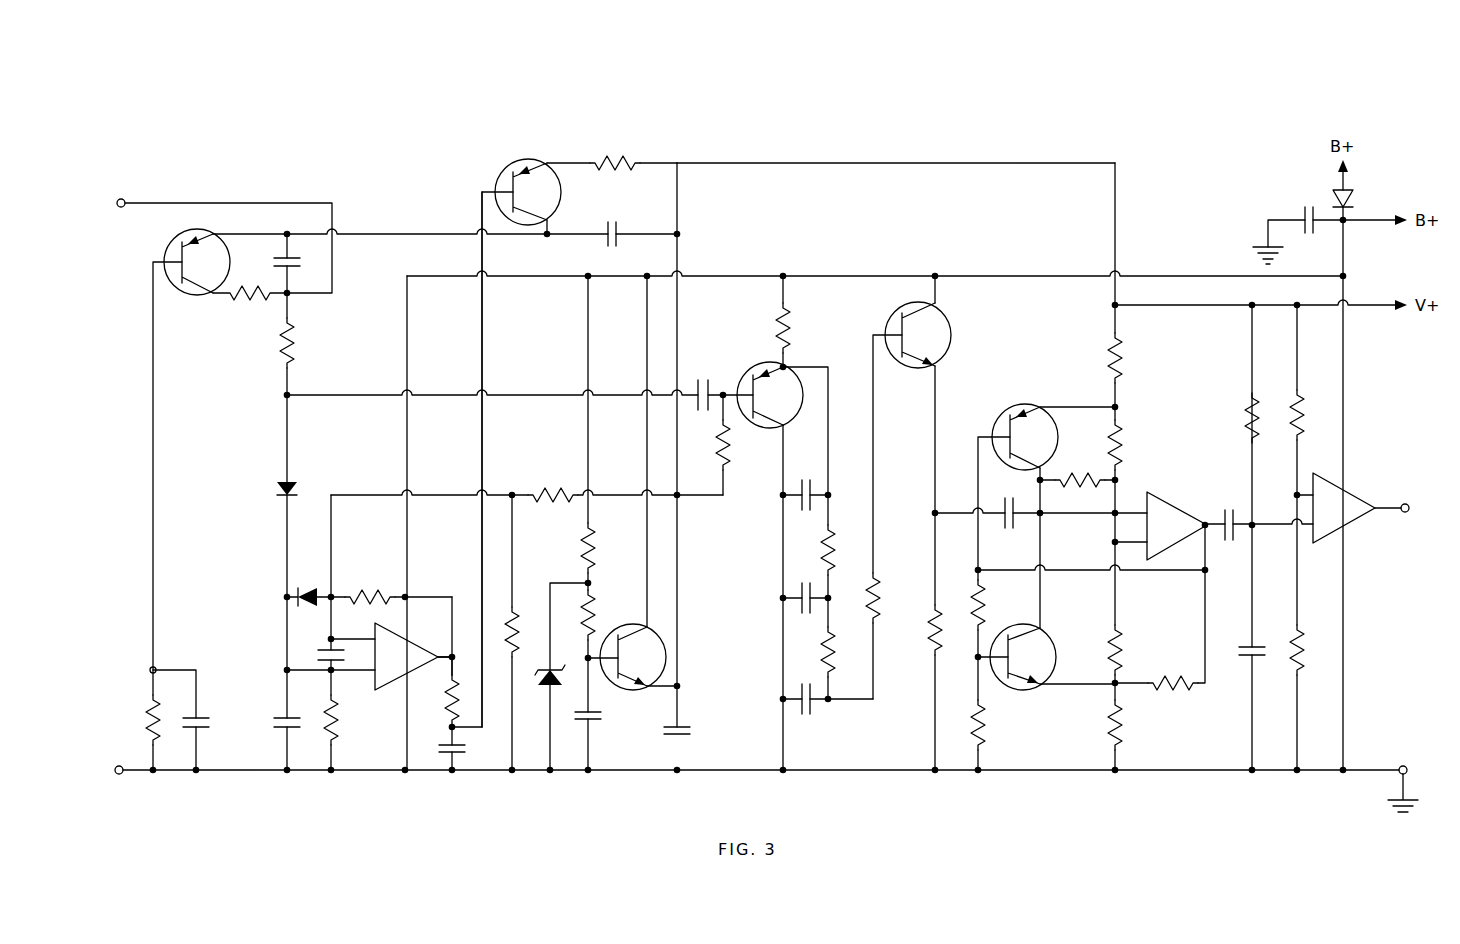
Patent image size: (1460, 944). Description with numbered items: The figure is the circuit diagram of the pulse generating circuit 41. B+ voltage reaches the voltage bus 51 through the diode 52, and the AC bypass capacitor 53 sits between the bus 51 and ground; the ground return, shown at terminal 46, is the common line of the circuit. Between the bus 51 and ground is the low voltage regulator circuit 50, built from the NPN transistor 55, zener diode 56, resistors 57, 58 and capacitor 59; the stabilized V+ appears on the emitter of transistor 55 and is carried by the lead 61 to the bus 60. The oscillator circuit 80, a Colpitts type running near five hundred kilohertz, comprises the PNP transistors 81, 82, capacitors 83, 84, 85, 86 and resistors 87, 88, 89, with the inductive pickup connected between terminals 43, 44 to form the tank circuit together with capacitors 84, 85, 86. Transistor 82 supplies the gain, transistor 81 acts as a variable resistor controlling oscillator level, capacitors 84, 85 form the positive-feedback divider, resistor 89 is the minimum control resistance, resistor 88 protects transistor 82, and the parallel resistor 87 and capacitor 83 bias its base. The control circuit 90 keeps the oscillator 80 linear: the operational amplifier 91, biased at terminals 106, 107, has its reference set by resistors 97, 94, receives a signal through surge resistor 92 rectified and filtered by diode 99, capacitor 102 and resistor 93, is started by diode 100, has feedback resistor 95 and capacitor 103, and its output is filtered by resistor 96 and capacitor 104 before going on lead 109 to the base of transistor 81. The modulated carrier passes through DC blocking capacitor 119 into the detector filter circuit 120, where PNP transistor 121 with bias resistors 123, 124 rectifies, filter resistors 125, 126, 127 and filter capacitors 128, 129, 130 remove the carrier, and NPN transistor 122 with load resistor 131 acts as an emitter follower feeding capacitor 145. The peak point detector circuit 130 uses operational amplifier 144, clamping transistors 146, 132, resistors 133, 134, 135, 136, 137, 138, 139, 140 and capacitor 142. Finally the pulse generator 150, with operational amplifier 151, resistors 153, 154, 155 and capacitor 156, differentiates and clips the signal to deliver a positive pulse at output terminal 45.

The pulse generating circuit 41 is at (428, 785).
The terminal 43 is at (118, 199).
The terminal 44 is at (116, 766).
The output terminal 45 is at (1409, 505).
The ground terminal 46 is at (1406, 766).
The low voltage regulator circuit 50 is at (710, 610).
The voltage bus 51 is at (1142, 274).
The diode 52 is at (1352, 200).
The AC bypass capacitor 53 is at (1300, 213).
The NPN transistor 55 is at (672, 668).
The zener diode 56 is at (535, 674).
The resistor 57 is at (580, 547).
The resistor 58 is at (595, 614).
The capacitor 59 is at (598, 729).
The bus 60 is at (872, 160).
The lead 61 is at (684, 330).
The oscillator circuit 80 is at (247, 220).
The control transistor 81 is at (511, 170).
The transistor 82 is at (184, 243).
The capacitor 83 is at (200, 728).
The capacitor 84 is at (292, 270).
The capacitor 85 is at (619, 228).
The capacitor 86 is at (689, 728).
The resistor 87 is at (148, 716).
The resistor 88 is at (250, 308).
The resistor 89 is at (609, 156).
The control circuit 90 is at (445, 550).
The operational amplifier 91 is at (399, 656).
The surge resistor 92 is at (297, 348).
The resistor 93 is at (336, 726).
The resistor 94 is at (516, 622).
The resistor 95 is at (364, 592).
The resistor 96 is at (458, 698).
The resistor 97 is at (553, 488).
The diode 99 is at (291, 483).
The diode 100 is at (307, 590).
The capacitor 102 is at (279, 720).
The capacitor 103 is at (325, 655).
The capacitor 104 is at (444, 752).
The terminal 106 is at (406, 648).
The terminal 107 is at (406, 675).
The lead 109 is at (485, 345).
The DC blocking capacitor 119 is at (706, 378).
The detector filter circuit 120 is at (833, 348).
The PNP transistor 121 is at (795, 422).
The NPN transistor 122 is at (952, 341).
The bias resistor 123 is at (731, 455).
The bias resistor 124 is at (794, 333).
The filter resistor 125 is at (833, 548).
The filter resistor 126 is at (833, 656).
The filter resistor 127 is at (880, 590).
The filter capacitor 128 is at (806, 486).
The filter capacitor 129 is at (808, 592).
The filter capacitor / peak point detector circuit 130 is at (808, 692).
The load resistor 131 is at (930, 630).
The NPN transistor 132 is at (1060, 659).
The resistor 133 is at (985, 612).
The resistor 134 is at (986, 730).
The resistor 135 is at (1081, 478).
The resistor 136 is at (1109, 648).
The resistor 137 is at (1110, 722).
The resistor 138 is at (1156, 690).
The resistor 139 is at (1125, 358).
The resistor 140 is at (1124, 456).
The capacitor 142 is at (1232, 542).
The operational amplifier 144 is at (1176, 514).
The capacitor 145 is at (1016, 531).
The PNP transistor 146 is at (1058, 425).
The pulse generator 150 is at (1321, 446).
The operational amplifier 151 is at (1337, 508).
The resistor 153 is at (1248, 414).
The resistor 154 is at (1302, 424).
The resistor 155 is at (1306, 651).
The capacitor 156 is at (1247, 646).